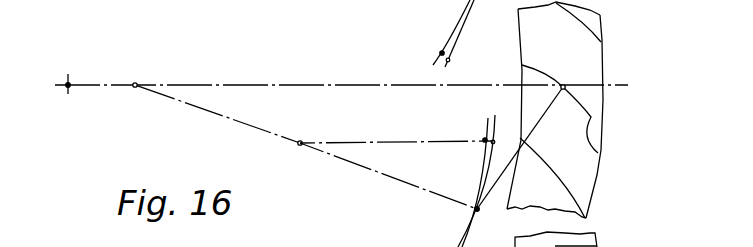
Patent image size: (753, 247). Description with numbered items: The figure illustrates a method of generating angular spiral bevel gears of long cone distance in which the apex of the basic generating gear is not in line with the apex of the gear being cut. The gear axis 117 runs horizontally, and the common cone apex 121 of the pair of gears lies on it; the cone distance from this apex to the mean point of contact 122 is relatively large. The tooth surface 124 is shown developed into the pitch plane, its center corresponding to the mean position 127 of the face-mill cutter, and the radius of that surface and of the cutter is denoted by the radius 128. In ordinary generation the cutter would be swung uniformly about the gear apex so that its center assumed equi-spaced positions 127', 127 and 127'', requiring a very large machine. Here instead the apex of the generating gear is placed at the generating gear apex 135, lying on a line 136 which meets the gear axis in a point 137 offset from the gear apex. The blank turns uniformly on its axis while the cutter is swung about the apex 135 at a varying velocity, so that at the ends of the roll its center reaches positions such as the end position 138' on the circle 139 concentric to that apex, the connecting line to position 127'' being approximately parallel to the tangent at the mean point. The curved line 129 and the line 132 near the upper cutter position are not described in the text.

The gear axis 117 is at (341, 72).
The cone apex 121 is at (65, 89).
The mean point of contact 122 is at (564, 85).
The tooth surface 124 is at (601, 150).
The mean position of cutter center 127 is at (479, 134).
The cutter center position 127' is at (470, 51).
The cutter center position 127'' is at (504, 124).
The tooth surface radius 128 is at (424, 242).
The mirror surface 129 is at (465, 32).
The tangent line 132 is at (437, 63).
The generating gear apex 135 is at (299, 147).
The line 136 is at (269, 133).
The offset point 137 is at (135, 82).
The cutter center end position 138' is at (466, 178).
The circle 139 is at (487, 163).